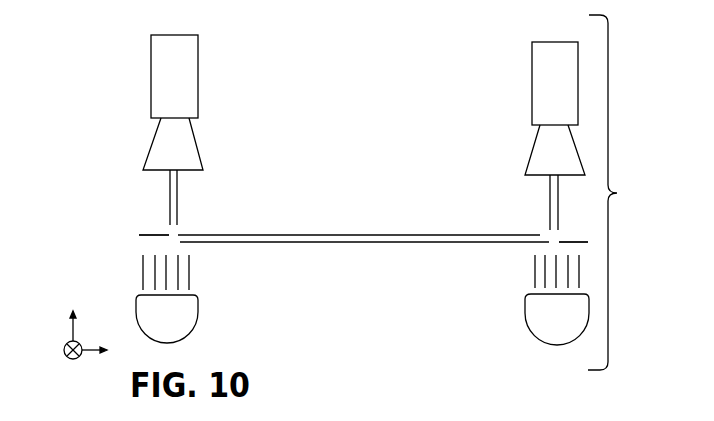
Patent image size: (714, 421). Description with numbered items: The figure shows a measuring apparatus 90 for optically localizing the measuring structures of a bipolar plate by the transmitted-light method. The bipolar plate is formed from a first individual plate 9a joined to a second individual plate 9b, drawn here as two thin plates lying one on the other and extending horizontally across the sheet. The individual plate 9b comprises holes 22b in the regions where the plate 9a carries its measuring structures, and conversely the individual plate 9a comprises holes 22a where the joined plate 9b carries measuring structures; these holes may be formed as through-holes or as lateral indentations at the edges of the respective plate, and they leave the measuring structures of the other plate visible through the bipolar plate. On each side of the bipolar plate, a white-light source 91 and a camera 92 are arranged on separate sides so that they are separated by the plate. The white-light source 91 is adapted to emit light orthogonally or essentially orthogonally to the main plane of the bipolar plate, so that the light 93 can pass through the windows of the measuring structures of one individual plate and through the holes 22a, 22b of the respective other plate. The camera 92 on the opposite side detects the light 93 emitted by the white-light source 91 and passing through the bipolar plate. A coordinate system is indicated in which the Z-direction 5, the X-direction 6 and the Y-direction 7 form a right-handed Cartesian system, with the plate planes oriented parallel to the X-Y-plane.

The inspection unit 90 is at (619, 192).
The white-light source 91 is at (177, 329).
The camera 92 is at (183, 160).
The light 93 is at (177, 202).
The individual plate 9a is at (388, 233).
The individual plate 9b is at (406, 244).
The holes 22a is at (541, 232).
The holes 22b is at (170, 241).
The Z-direction 5 is at (73, 326).
The X-direction 6 is at (90, 348).
The Y-direction 7 is at (73, 360).